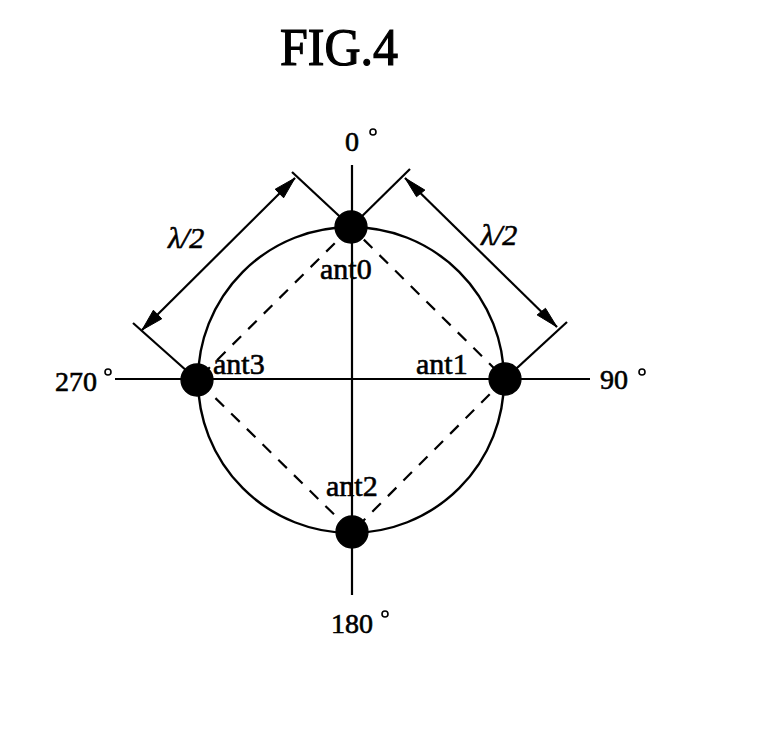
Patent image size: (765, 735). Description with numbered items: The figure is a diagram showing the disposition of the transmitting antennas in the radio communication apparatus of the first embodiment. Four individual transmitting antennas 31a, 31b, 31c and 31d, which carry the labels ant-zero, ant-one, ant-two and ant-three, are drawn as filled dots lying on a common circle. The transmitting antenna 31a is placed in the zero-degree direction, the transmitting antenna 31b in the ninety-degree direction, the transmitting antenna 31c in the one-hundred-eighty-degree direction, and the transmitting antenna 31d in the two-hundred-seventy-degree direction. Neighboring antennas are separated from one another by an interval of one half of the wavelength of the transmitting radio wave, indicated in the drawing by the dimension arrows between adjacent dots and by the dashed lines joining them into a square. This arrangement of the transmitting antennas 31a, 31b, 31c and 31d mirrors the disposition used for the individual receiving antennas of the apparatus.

The transmitting antenna 31a is at (340, 210).
The transmitting antenna 31b is at (515, 388).
The transmitting antenna 31c is at (343, 544).
The transmitting antenna 31d is at (184, 393).